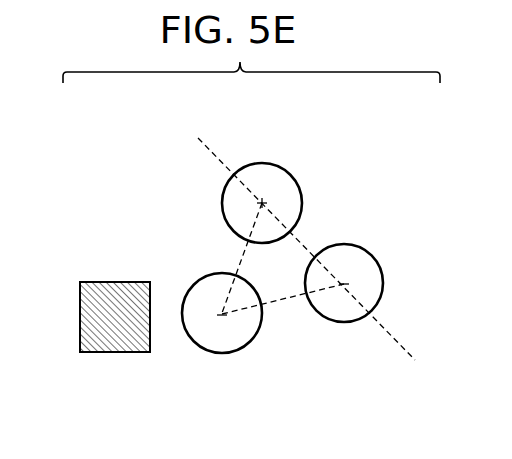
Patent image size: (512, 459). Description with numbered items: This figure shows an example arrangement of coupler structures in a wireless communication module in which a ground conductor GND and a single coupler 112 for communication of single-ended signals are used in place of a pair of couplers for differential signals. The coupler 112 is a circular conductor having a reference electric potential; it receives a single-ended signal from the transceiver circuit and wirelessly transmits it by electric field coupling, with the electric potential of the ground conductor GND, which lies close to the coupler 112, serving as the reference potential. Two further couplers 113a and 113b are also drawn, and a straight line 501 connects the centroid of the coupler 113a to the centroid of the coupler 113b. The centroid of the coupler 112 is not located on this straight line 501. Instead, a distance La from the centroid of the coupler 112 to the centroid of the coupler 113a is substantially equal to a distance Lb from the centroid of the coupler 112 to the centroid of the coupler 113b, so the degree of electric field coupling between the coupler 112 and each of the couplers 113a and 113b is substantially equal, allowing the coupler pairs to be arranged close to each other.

The straight line 501 is at (211, 149).
The coupler 113a is at (287, 169).
The coupler 113b is at (383, 268).
The coupler 112 is at (217, 353).
The distance La is at (242, 258).
The distance Lb is at (287, 303).
The ground conductor GND is at (115, 353).